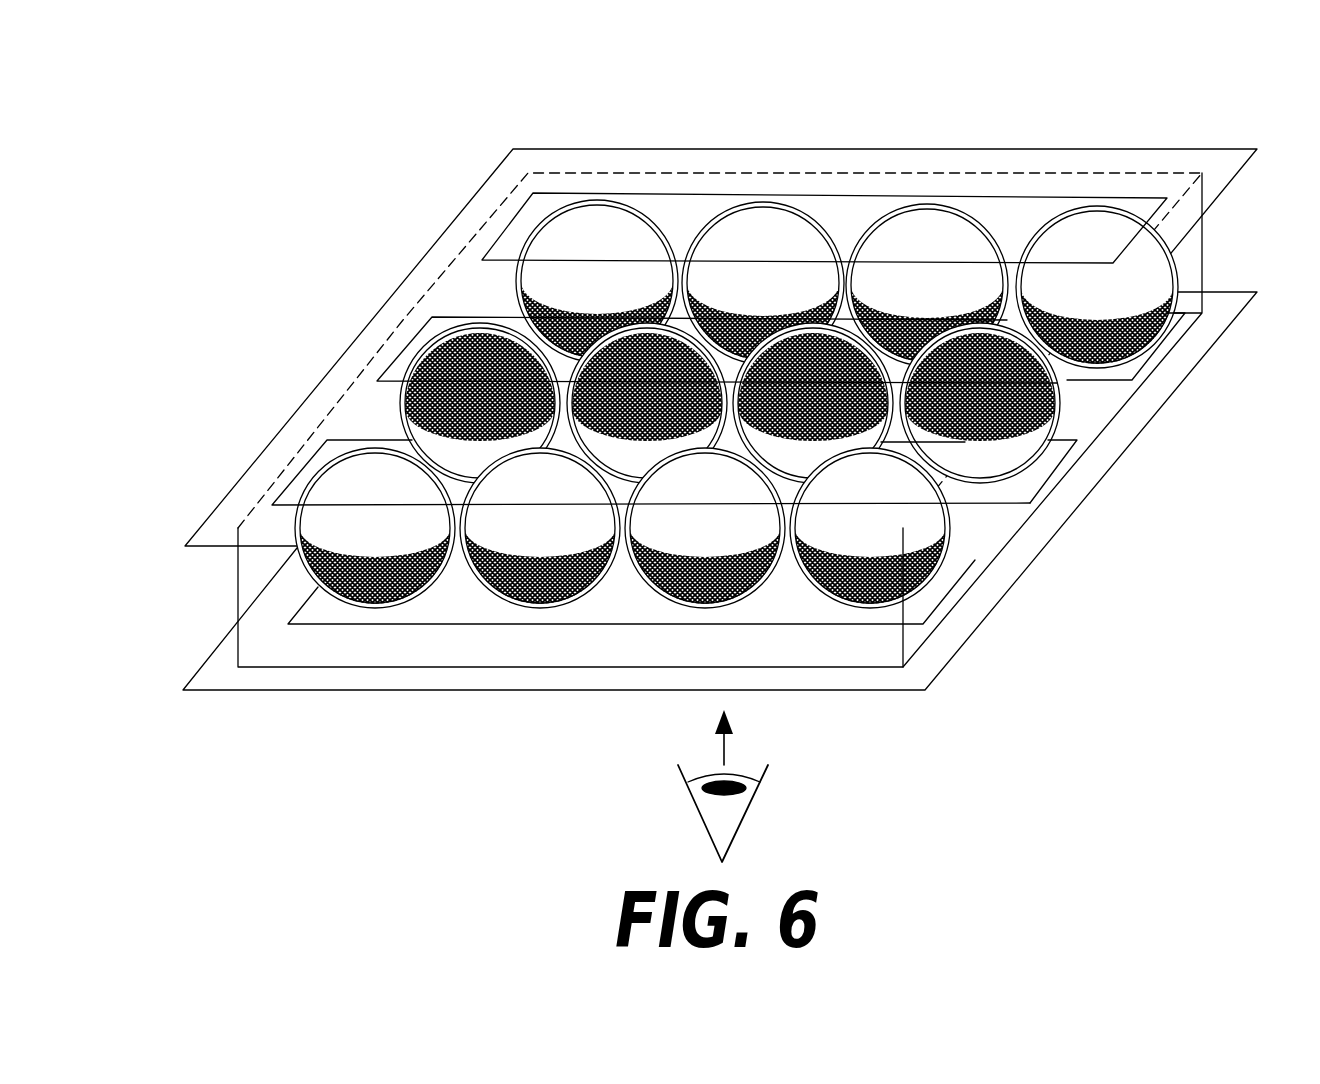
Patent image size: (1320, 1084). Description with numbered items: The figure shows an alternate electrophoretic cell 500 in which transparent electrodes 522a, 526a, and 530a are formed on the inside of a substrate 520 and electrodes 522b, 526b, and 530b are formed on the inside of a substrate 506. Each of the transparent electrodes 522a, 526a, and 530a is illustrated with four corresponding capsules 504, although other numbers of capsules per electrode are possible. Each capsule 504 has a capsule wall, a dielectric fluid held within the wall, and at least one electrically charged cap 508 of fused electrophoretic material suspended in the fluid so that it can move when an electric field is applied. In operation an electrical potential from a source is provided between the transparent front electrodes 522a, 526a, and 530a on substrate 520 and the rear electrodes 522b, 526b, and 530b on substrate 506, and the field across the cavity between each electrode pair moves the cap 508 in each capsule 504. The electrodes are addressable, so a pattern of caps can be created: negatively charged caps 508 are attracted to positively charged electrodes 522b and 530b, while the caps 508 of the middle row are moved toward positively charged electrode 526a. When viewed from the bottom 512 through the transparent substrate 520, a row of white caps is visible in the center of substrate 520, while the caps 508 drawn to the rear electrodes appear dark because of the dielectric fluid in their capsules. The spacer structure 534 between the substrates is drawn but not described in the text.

The electrophoretic cell 500 is at (522, 110).
The capsule 504 is at (913, 612).
The substrate 506 is at (900, 150).
The cap 508 is at (1033, 445).
The bottom 512 is at (772, 808).
The substrate 520 is at (990, 600).
The transparent electrode 522a is at (455, 612).
The electrode 522b is at (300, 452).
The transparent electrode 526a is at (1033, 487).
The electrode 526b is at (410, 340).
The transparent electrode 530a is at (1133, 368).
The electrode 530b is at (515, 212).
The spacer wall 534 is at (237, 578).